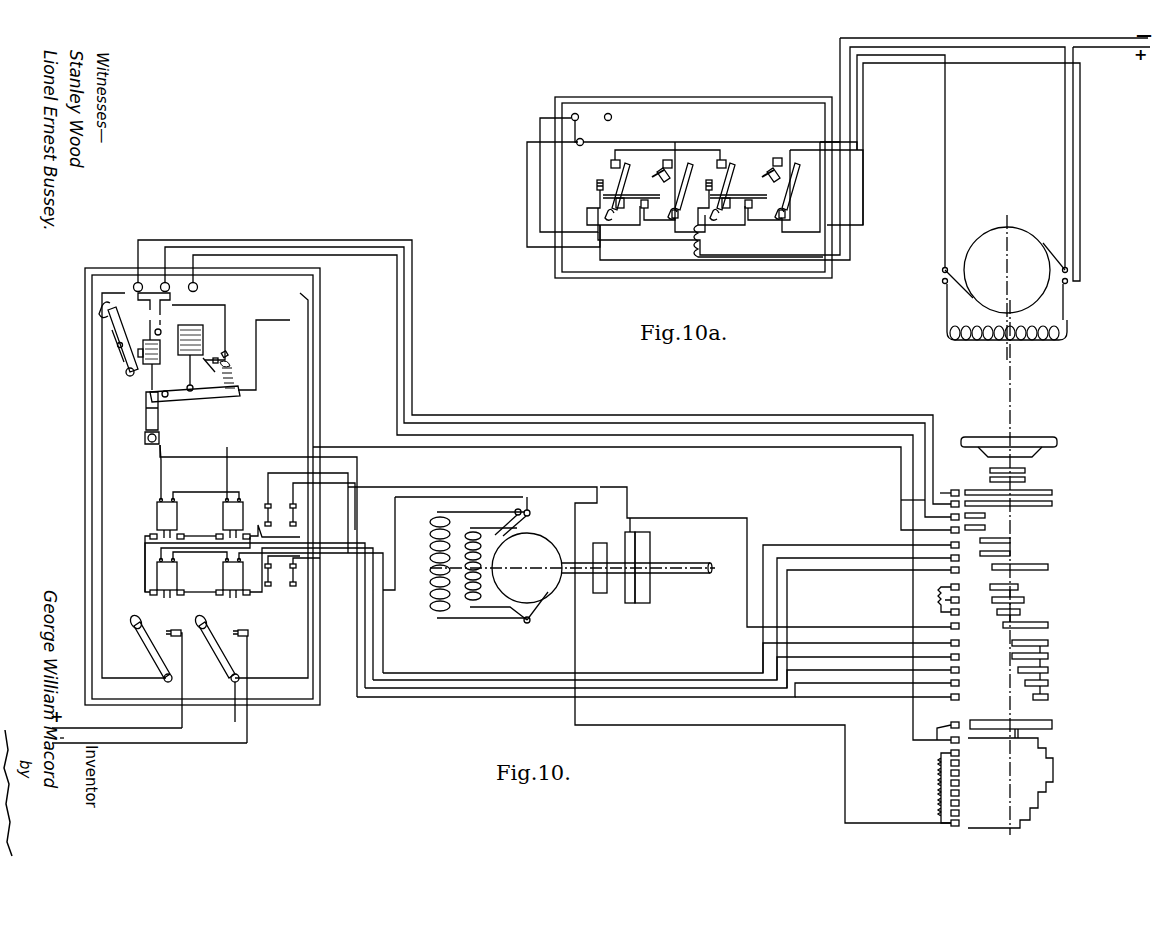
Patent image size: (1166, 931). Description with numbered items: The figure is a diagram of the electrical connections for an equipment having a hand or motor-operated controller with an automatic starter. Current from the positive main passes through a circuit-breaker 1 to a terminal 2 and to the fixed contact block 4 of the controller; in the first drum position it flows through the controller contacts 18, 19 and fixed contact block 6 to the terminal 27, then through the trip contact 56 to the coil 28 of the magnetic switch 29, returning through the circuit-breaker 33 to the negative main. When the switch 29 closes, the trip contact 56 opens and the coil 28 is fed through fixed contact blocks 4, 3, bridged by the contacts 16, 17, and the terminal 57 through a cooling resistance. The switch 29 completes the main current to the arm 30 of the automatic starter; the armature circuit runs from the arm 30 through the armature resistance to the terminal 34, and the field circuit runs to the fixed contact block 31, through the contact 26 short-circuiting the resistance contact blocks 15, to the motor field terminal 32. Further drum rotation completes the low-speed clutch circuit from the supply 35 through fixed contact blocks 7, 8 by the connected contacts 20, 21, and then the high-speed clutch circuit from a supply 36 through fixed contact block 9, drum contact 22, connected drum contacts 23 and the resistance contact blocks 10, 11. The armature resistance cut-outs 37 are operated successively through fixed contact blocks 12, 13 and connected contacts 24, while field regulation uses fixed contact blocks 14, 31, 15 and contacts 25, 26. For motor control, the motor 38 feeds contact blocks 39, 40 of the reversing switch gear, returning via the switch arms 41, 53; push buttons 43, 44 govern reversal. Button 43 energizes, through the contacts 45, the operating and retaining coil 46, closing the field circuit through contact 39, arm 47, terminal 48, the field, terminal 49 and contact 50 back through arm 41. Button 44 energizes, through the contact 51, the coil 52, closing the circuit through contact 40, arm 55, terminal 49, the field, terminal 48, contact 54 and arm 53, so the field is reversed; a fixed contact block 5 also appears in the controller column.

In FIG. 10, the circuit-breaker 1 is at (150, 650).
In FIG. 10, the terminal 2 is at (198, 287).
In FIG. 10, the fixed contact block 3 is at (946, 482).
In FIG. 10, the fixed contact block 4 is at (944, 505).
In FIG. 10, the contact 5 is at (944, 518).
In FIG. 10, the fixed contact block 6 is at (944, 531).
In FIG. 10, the fixed contact block 7 is at (944, 545).
In FIG. 10, the fixed contact block 8 is at (944, 558).
In FIG. 10, the fixed contact block 9 is at (944, 571).
In FIG. 10, the resistance contact blocks 10 is at (962, 588).
In FIG. 10, the resistance contact block 11 is at (959, 626).
In FIG. 10, the fixed contact block 12 is at (959, 644).
In FIG. 10, the fixed contact blocks 13 is at (965, 655).
In FIG. 10, the fixed contact block 14 is at (950, 723).
In FIG. 10, the resistance contact blocks 15 is at (966, 752).
In FIG. 10, the contact 16 is at (1050, 492).
In FIG. 10, the contact 17 is at (1050, 504).
In FIG. 10, the controller contact 18 is at (984, 517).
In FIG. 10, the controller contact 19 is at (984, 529).
In FIG. 10, the connected contact 20 is at (1010, 541).
In FIG. 10, the connected contact 21 is at (1010, 554).
In FIG. 10, the drum contact 22 is at (1048, 568).
In FIG. 10, the connected drum contacts 23 is at (1030, 585).
In FIG. 10, the connected contacts 24 is at (1055, 640).
In FIG. 10, the contact 25 is at (1048, 726).
In FIG. 10, the contact 26 is at (1040, 774).
In FIG. 10, the terminal 27 is at (164, 283).
In FIG. 10, the coil 28 is at (150, 370).
In FIG. 10, the magnetic switch 29 is at (128, 370).
In FIG. 10, the arm 30 is at (194, 400).
In FIG. 10, the fixed contact block 31 is at (959, 742).
In FIG. 10, the motor field terminal 32 is at (503, 515).
In FIG. 10, the circuit-breaker 33 is at (217, 650).
In FIG. 10, the terminal 34 is at (530, 516).
In FIG. 10, the supply 35 is at (310, 513).
In FIG. 10, the supply 36 is at (292, 571).
In FIG. 10, the armature resistance cut-outs 37 is at (264, 571).
In FIG. 10, the motor 38 is at (1006, 287).
In FIG. 10A, the contact block 39 is at (618, 160).
In FIG. 10A, the contact block 40 is at (722, 160).
In FIG. 10A, the switch arm 41 is at (681, 165).
In FIG. 10A, the push button 43 is at (577, 113).
In FIG. 10A, the push button 44 is at (683, 181).
In FIG. 10A, the contacts 45 is at (748, 212).
In FIG. 10A, the operating and retaining coil 46 is at (598, 182).
In FIG. 10A, the arm 47 is at (622, 205).
In FIG. 10, the terminal 48 is at (940, 281).
In FIG. 10, the terminal 49 is at (1068, 283).
In FIG. 10A, the contact 50 is at (668, 160).
In FIG. 10A, the contact 51 is at (645, 212).
In FIG. 10A, the operating and retaining coil 52 is at (722, 205).
In FIG. 10A, the switch arm 53 is at (790, 212).
In FIG. 10A, the contact 54 is at (777, 160).
In FIG. 10A, the arm 55 is at (710, 190).
In FIG. 10, the trip contact 56 is at (166, 330).
In FIG. 10, the terminal 57 is at (136, 283).